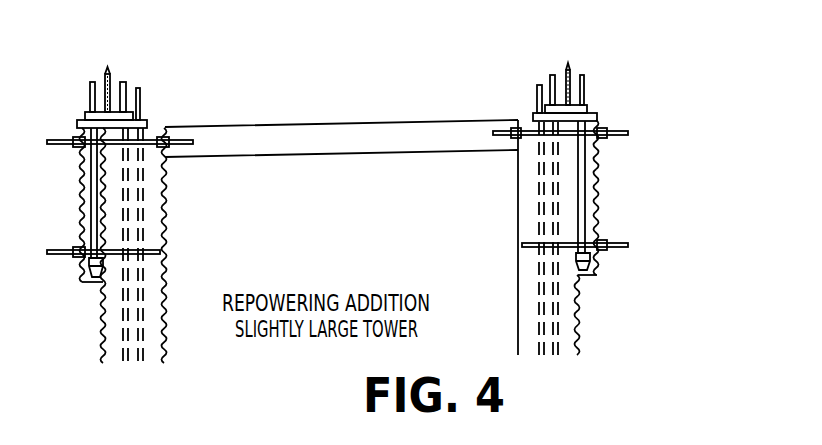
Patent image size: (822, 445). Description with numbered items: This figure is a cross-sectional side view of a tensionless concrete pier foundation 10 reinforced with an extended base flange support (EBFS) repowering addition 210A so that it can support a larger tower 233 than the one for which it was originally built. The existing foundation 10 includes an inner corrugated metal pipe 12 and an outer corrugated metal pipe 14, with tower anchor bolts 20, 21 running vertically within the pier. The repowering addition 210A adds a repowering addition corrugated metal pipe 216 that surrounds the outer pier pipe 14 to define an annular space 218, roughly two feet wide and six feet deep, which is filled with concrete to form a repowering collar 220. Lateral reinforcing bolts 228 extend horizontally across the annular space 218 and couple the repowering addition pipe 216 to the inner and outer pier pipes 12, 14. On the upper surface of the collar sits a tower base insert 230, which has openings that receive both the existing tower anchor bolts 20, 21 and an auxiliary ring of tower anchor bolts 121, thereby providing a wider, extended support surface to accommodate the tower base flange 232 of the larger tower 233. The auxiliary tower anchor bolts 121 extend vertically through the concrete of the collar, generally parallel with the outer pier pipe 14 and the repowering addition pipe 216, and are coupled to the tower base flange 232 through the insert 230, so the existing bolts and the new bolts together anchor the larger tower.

The tensionless concrete pier foundation 10 is at (245, 125).
The inner corrugated metal pipe 12 is at (520, 225).
The outer corrugated metal pipe 14 is at (577, 340).
The tower anchor bolt 20 is at (560, 305).
The tower anchor bolt 21 is at (540, 300).
The auxiliary tower anchor bolt 121 is at (600, 185).
The repowering addition corrugated metal pipe 216 is at (600, 165).
The annular space 218 is at (598, 214).
The repowering collar 220 is at (601, 261).
The lateral reinforcing bolt 228 is at (617, 130).
The tower base insert 230 is at (592, 114).
The tower base flange 232 is at (586, 112).
The larger tower 233 is at (566, 72).
The extended base flange support repowering addition 210A is at (677, 55).